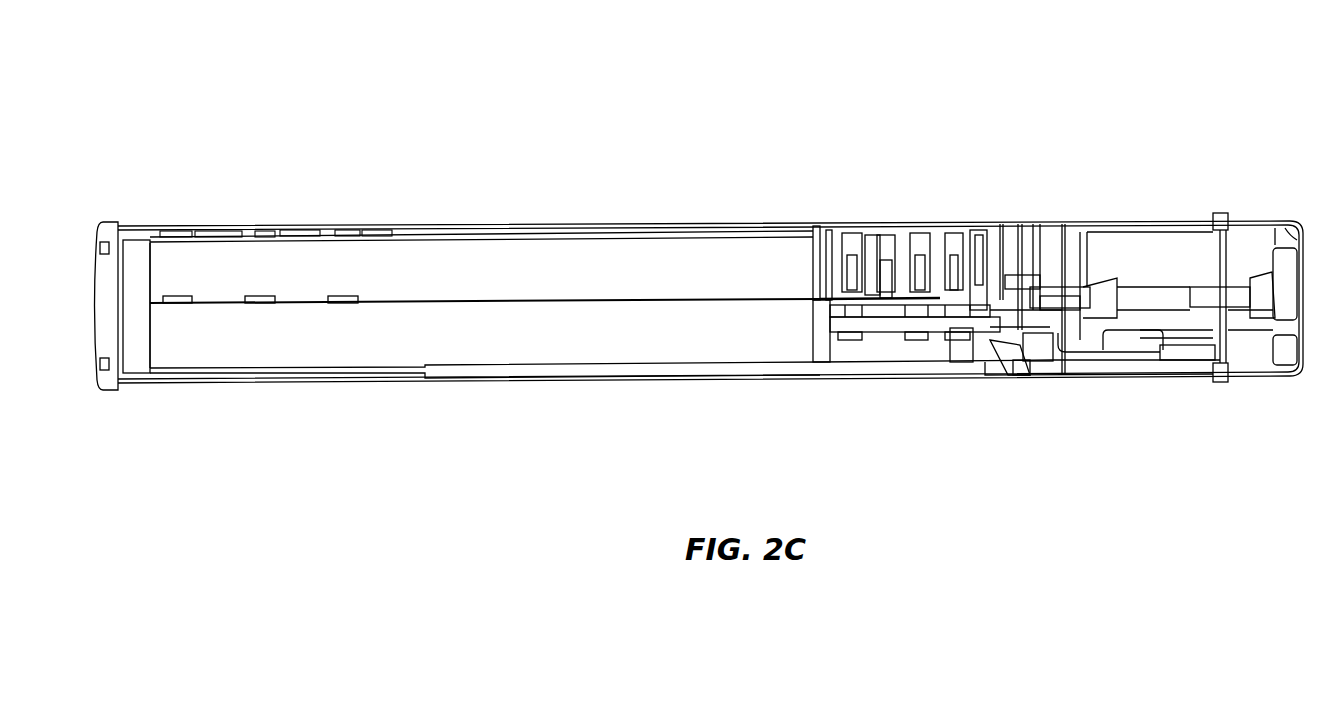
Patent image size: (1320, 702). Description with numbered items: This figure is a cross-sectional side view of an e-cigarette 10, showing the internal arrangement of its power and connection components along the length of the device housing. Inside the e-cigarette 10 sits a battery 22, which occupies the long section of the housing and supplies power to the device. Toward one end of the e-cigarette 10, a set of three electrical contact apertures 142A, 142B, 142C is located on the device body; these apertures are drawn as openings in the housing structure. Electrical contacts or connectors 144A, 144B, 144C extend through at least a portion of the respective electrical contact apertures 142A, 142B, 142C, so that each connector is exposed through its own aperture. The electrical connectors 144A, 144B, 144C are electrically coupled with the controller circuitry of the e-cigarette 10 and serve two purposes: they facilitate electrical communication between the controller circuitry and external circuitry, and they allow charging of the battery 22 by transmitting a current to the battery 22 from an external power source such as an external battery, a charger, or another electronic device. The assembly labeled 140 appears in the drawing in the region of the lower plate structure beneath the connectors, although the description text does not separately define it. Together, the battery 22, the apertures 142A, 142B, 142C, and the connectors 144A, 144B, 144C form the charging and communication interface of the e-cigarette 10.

The e-cigarette 10 is at (560, 96).
The battery 22 is at (297, 267).
The drive assembly 140 is at (883, 322).
The electrical contact aperture 142A is at (852, 228).
The electrical contact aperture 142B is at (920, 228).
The electrical contact aperture 142C is at (955, 228).
The electrical connector 144A is at (853, 273).
The electrical connector 144B is at (920, 282).
The electrical connector 144C is at (962, 270).